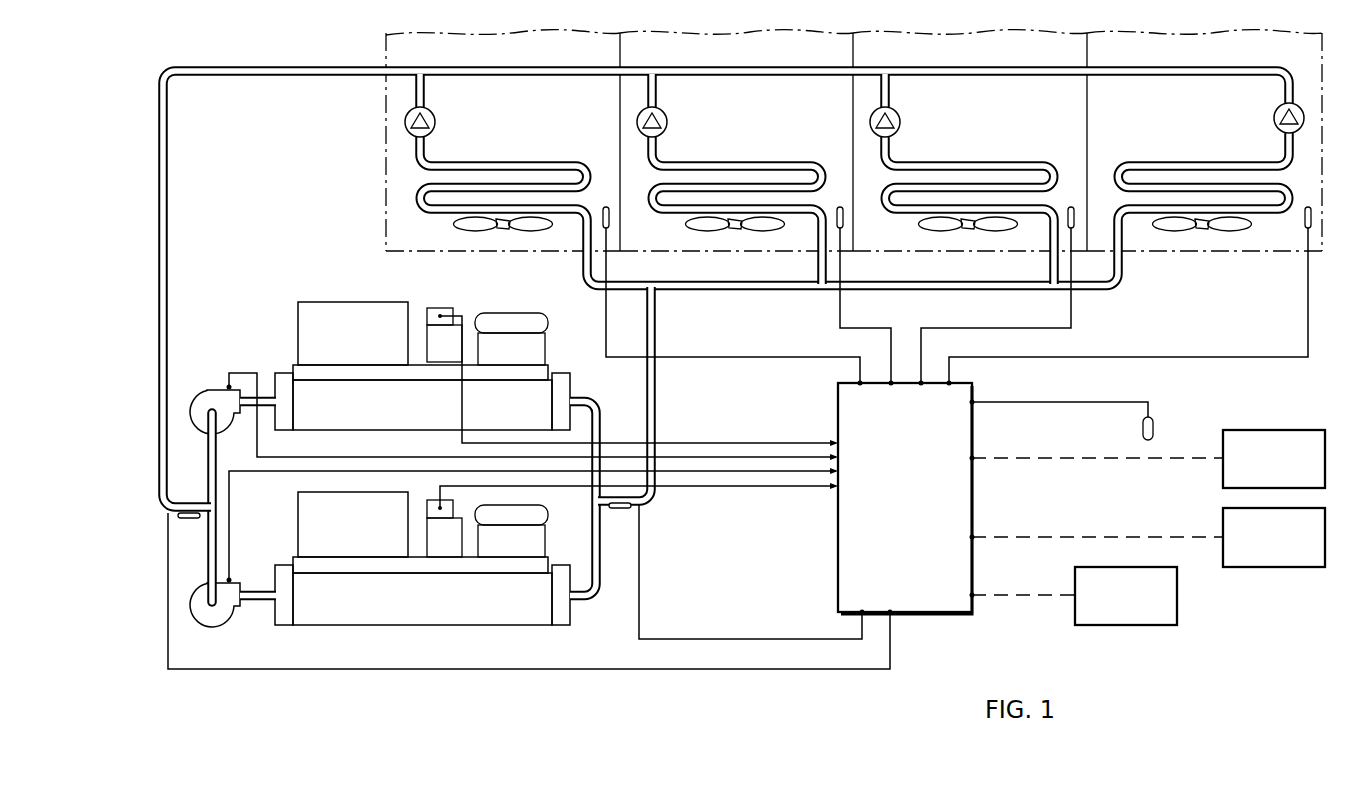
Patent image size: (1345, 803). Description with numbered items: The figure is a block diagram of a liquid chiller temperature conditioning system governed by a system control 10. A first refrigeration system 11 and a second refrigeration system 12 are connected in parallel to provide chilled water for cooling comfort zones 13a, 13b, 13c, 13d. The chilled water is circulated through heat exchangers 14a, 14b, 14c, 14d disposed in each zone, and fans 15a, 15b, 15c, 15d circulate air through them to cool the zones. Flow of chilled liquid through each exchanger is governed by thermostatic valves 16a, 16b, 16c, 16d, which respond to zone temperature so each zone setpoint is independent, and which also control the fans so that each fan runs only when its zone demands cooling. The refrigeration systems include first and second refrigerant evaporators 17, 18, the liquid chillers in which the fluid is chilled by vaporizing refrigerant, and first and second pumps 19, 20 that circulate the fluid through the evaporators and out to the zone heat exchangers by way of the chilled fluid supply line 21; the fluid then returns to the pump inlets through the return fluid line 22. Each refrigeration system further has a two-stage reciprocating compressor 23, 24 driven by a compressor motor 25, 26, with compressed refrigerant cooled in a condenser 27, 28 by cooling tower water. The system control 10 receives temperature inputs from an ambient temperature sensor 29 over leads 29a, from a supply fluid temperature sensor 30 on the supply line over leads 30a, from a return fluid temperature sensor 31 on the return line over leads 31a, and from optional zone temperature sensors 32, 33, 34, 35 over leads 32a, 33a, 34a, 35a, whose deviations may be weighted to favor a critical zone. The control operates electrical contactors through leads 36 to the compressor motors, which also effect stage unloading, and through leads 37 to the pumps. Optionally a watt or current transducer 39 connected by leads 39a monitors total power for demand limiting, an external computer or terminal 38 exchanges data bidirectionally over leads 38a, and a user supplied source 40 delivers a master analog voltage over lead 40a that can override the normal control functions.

The system control 10 is at (977, 518).
The first refrigeration system 11 is at (558, 338).
The second refrigeration system 12 is at (524, 502).
The comfort zone 13a is at (537, 132).
The comfort zone 13b is at (770, 132).
The comfort zone 13c is at (997, 120).
The comfort zone 13d is at (1185, 129).
The heat exchanger 14a is at (582, 162).
The heat exchanger 14b is at (790, 162).
The heat exchanger 14c is at (1042, 162).
The heat exchanger 14d is at (1240, 162).
The fan 15a is at (453, 226).
The fan 15b is at (686, 225).
The fan 15c is at (919, 226).
The fan 15d is at (1252, 226).
The thermostatic valve 16a is at (435, 122).
The thermostatic valve 16b is at (667, 122).
The thermostatic valve 16c is at (900, 122).
The thermostatic valve 16d is at (1274, 118).
The first refrigerant evaporator 17 is at (384, 414).
The second refrigerant evaporator 18 is at (406, 608).
The first pump 19 is at (208, 390).
The second pump 20 is at (222, 616).
The chilled fluid supply line 21 is at (757, 290).
The return fluid line 22 is at (707, 70).
The first reciprocating compressor 23 is at (530, 313).
The second reciprocating compressor 24 is at (548, 545).
The first compressor motor 25 is at (428, 310).
The second compressor motor 26 is at (428, 504).
The first condenser 27 is at (324, 306).
The second condenser 28 is at (298, 502).
The ambient temperature sensor 29 is at (1154, 430).
The leads 29a is at (1094, 402).
The supply fluid temperature sensor 30 is at (620, 509).
The leads 30a is at (752, 639).
The return fluid temperature sensor 31 is at (187, 519).
The leads 31a is at (606, 668).
The zone temperature sensor 32 is at (606, 207).
The leads 32a is at (795, 357).
The zone temperature sensor 33 is at (840, 207).
The leads 33a is at (880, 328).
The zone temperature sensor 34 is at (1071, 207).
The leads 34a is at (945, 328).
The zone temperature sensor 35 is at (1308, 207).
The leads 35a is at (1215, 357).
The contactor control leads 36 is at (775, 443).
The leads 37 is at (315, 457).
The external computer or terminal 38 is at (1290, 568).
The leads 38a is at (1126, 537).
The watt or current transducer 39 is at (1290, 430).
The leads 39a is at (1069, 458).
The user supplied source 40 is at (1121, 626).
The lead 40a is at (1046, 598).